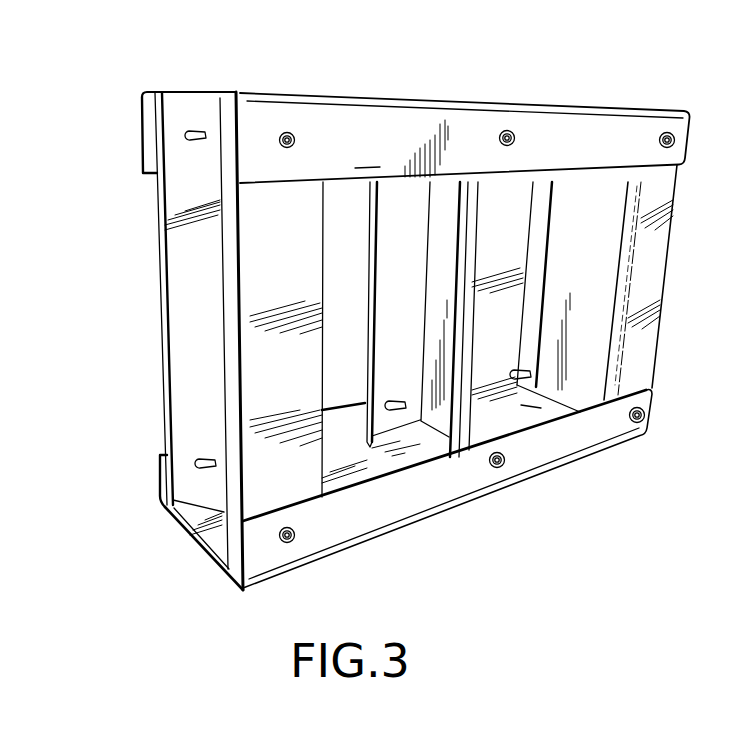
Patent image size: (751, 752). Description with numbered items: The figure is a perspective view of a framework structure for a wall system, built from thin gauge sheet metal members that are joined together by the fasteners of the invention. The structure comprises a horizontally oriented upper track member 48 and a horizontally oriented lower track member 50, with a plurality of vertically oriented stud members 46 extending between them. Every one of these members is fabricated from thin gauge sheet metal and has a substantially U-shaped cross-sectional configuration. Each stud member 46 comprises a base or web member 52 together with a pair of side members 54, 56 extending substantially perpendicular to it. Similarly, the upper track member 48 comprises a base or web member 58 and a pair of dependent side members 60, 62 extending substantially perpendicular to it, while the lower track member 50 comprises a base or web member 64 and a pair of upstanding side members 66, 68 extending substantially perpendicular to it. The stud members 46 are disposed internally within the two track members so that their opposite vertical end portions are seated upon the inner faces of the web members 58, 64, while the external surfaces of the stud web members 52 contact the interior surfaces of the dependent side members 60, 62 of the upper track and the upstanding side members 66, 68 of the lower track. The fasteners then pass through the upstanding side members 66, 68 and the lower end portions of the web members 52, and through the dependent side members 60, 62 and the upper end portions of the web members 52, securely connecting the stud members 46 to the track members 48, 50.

The vertically oriented stud member 46 is at (667, 284).
The upper track member 48 is at (442, 103).
The lower track member 50 is at (552, 468).
The base or web member of stud member 52 is at (263, 433).
The side member of stud member 54 is at (233, 350).
The side member of stud member 56 is at (155, 200).
The base or web member of upper track member 58 is at (200, 96).
The dependent side member of upper track member 60 is at (143, 128).
The dependent side member of upper track member 62 is at (377, 151).
The base or web member of lower track member 64 is at (190, 530).
The upstanding side member of lower track member 66 is at (158, 472).
The upstanding side member of lower track member 68 is at (330, 523).